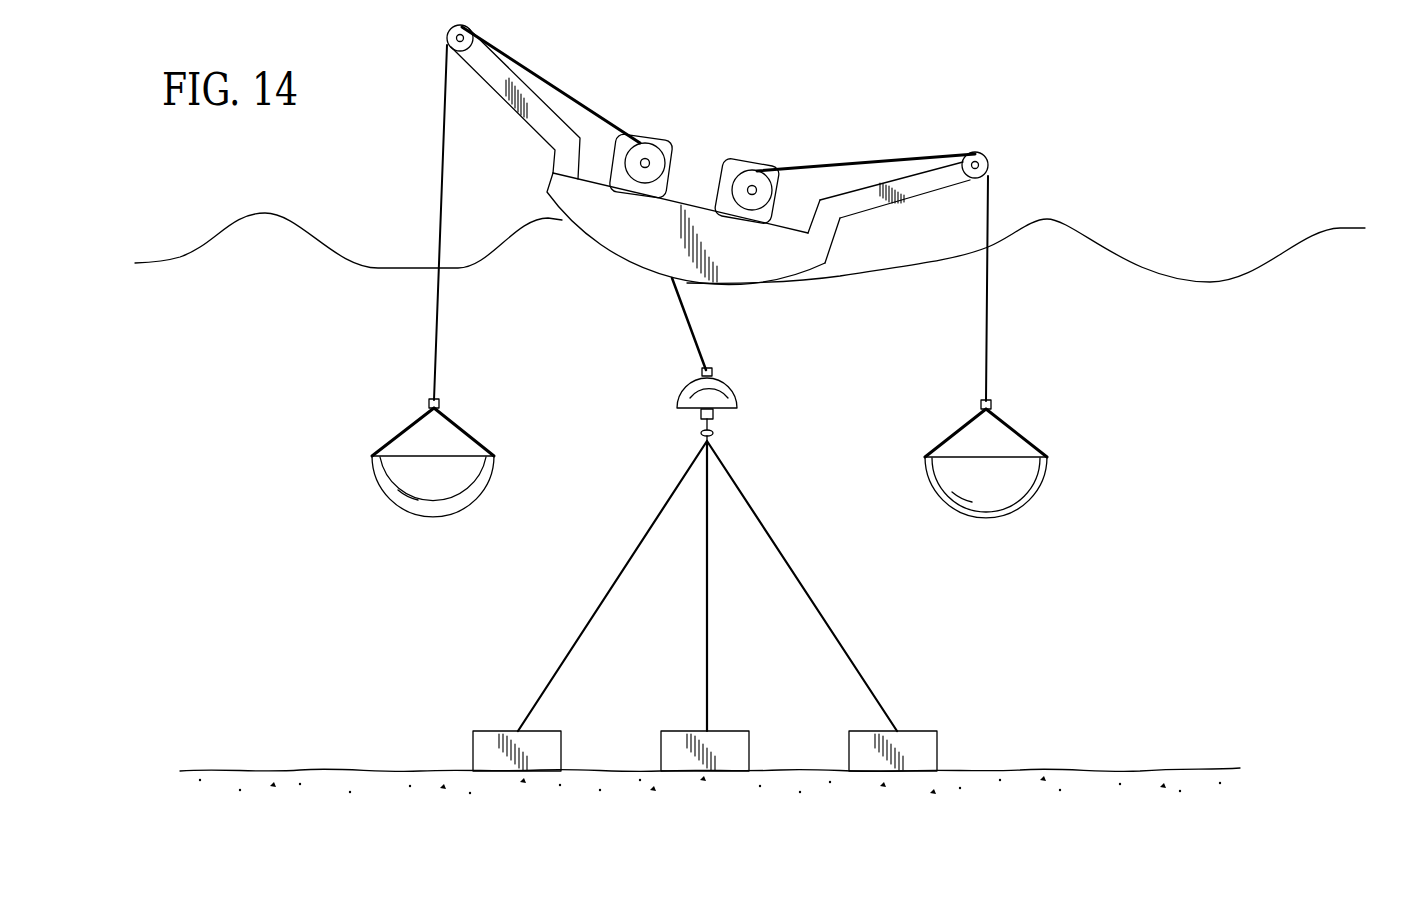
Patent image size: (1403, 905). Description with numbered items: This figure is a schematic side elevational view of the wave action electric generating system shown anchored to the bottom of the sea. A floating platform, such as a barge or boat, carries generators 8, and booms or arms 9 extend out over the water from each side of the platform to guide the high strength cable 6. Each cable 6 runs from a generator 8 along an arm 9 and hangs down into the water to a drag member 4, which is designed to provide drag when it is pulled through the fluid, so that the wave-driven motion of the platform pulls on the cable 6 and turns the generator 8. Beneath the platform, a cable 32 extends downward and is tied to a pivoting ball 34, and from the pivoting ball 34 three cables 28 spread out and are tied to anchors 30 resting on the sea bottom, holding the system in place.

The drag members 4 is at (372, 468).
The high strength cable 6 is at (553, 82).
The generator 8 is at (656, 128).
The booms or arms 9 is at (500, 92).
The cables 28 is at (590, 622).
The anchors 30 is at (548, 730).
The cable 32 is at (693, 328).
The pivoting ball 34 is at (740, 398).